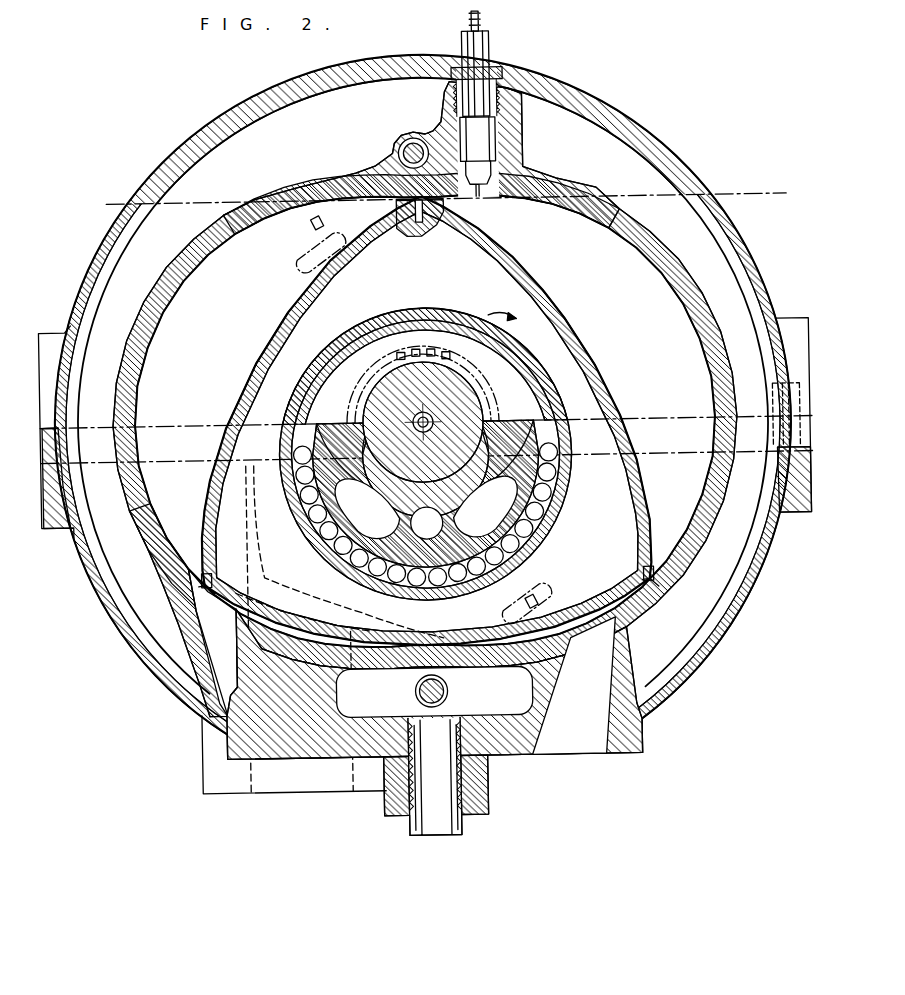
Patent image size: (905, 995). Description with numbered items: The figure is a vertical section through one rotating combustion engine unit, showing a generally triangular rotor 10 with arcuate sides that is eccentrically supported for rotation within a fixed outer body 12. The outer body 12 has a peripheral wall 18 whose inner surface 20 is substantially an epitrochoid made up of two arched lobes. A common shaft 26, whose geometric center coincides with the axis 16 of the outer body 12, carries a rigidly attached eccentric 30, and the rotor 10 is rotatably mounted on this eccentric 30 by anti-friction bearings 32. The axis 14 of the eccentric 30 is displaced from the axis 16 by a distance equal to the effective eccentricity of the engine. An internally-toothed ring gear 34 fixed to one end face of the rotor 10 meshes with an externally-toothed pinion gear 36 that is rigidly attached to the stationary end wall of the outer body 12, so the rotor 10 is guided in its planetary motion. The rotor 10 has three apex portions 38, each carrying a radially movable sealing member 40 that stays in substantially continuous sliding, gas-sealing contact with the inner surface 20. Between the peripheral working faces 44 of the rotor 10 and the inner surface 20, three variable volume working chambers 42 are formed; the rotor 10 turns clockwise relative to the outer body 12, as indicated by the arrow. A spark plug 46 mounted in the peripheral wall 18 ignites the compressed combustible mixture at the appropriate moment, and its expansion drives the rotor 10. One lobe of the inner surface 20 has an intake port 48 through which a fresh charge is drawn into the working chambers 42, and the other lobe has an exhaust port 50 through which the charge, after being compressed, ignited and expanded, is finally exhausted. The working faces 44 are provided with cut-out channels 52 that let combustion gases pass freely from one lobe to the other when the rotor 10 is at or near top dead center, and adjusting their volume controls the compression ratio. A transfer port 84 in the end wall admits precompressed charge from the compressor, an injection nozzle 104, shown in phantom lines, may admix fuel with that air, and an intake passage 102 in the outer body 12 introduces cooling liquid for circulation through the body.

The rotor 10 is at (300, 300).
The outer body 12 is at (393, 52).
The axis of the engine eccentrics 14 is at (410, 496).
The axis of the outer body 16 is at (442, 474).
The peripheral wall 18 is at (540, 80).
The inner surface 20 is at (582, 216).
The common shaft 26 is at (405, 482).
The eccentric 30 is at (340, 528).
The anti-friction bearings 32 is at (560, 500).
The ring gear 34 is at (408, 346).
The pinion gear 36 is at (425, 350).
The apex portions 38 is at (440, 210).
The sealing members 40 is at (400, 212).
The working chambers 42 is at (214, 346).
The working faces 44 is at (250, 378).
The spark plug 46 is at (492, 43).
The intake port 48 is at (310, 560).
The exhaust port 50 is at (582, 720).
The channels 52 is at (458, 628).
The transfer port 84 is at (292, 257).
The intake passage 102 is at (445, 832).
The injection nozzle 104 is at (300, 232).